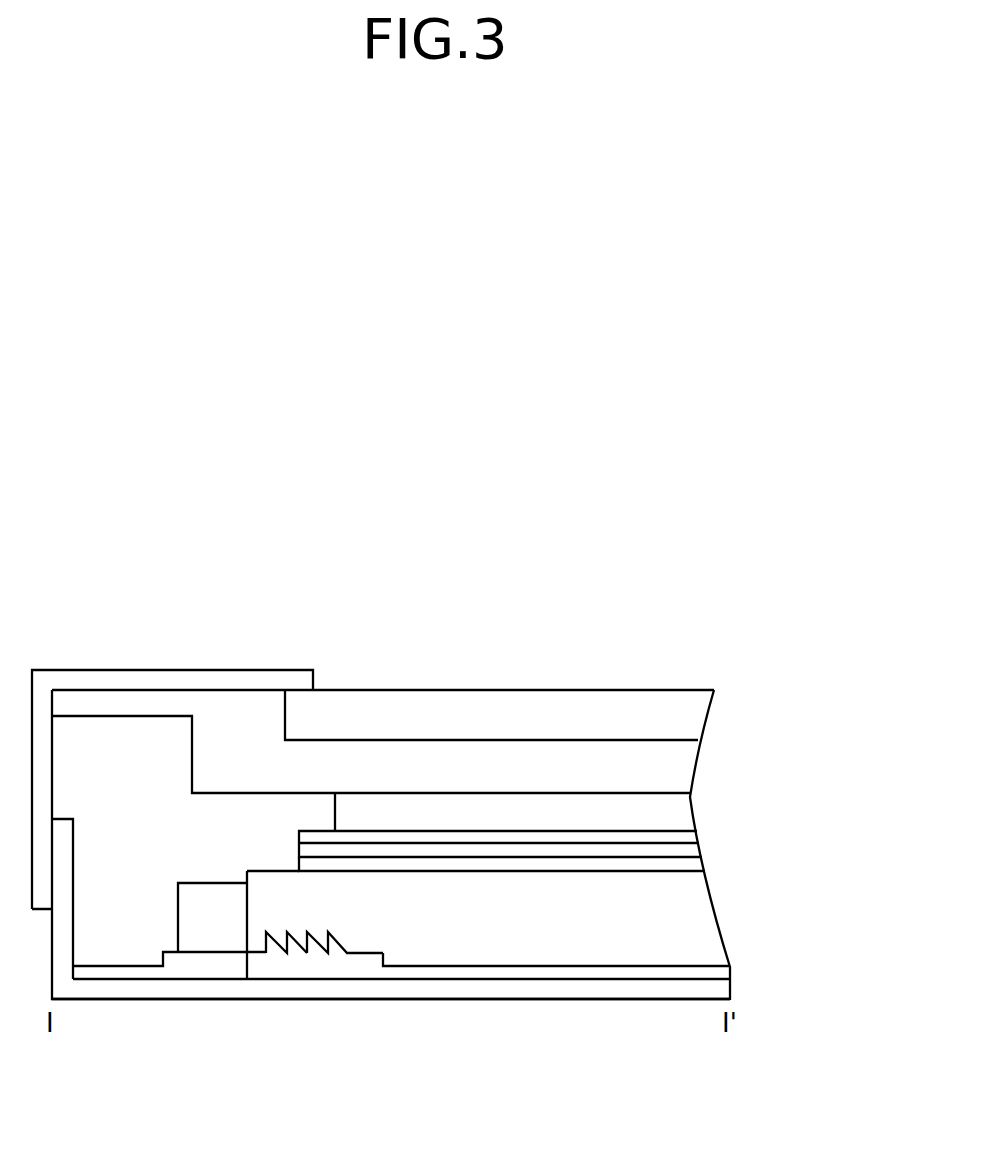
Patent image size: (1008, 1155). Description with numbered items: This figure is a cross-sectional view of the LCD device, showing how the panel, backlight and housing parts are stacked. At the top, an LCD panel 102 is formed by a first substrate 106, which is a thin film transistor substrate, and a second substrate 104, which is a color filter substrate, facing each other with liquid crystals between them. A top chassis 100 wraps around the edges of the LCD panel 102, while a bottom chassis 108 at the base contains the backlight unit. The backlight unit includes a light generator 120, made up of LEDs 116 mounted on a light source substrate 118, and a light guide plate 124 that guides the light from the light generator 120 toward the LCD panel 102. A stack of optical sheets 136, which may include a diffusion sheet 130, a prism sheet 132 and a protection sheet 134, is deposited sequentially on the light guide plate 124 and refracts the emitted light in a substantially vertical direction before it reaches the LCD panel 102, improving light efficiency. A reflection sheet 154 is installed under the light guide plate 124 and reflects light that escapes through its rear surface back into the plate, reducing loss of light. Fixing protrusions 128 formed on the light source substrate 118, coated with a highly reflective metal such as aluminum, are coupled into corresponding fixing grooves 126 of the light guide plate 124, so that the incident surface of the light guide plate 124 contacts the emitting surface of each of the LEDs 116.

The top chassis 100 is at (238, 680).
The LCD panel 102 is at (478, 741).
The second substrate 104 is at (698, 718).
The first substrate 106 is at (690, 769).
The bottom chassis 108 is at (718, 990).
The LEDs 116 is at (216, 920).
The light source substrate 118 is at (176, 959).
The light generator 120 is at (169, 1003).
The light guide plate 124 is at (710, 940).
The fixing grooves 126 is at (337, 943).
The fixing protrusions 128 is at (295, 947).
The diffusion sheet 130 is at (703, 866).
The prism sheet 132 is at (698, 850).
The protection sheet 134 is at (697, 833).
The optical sheets 136 is at (601, 846).
The reflection sheet 154 is at (722, 974).